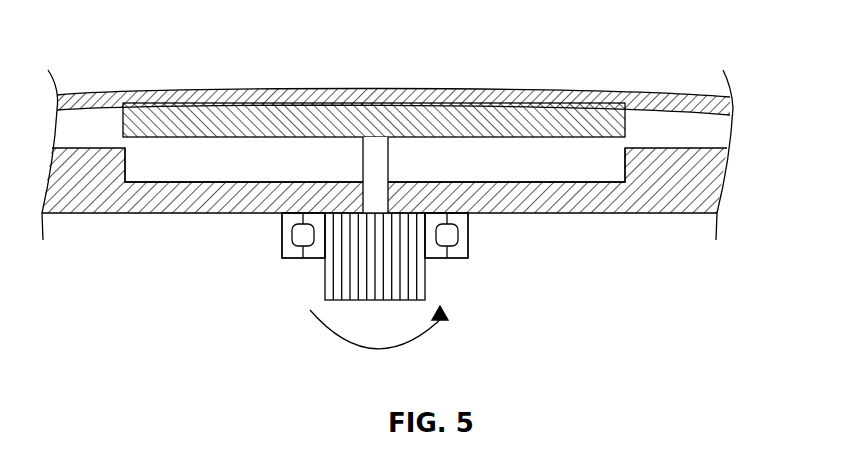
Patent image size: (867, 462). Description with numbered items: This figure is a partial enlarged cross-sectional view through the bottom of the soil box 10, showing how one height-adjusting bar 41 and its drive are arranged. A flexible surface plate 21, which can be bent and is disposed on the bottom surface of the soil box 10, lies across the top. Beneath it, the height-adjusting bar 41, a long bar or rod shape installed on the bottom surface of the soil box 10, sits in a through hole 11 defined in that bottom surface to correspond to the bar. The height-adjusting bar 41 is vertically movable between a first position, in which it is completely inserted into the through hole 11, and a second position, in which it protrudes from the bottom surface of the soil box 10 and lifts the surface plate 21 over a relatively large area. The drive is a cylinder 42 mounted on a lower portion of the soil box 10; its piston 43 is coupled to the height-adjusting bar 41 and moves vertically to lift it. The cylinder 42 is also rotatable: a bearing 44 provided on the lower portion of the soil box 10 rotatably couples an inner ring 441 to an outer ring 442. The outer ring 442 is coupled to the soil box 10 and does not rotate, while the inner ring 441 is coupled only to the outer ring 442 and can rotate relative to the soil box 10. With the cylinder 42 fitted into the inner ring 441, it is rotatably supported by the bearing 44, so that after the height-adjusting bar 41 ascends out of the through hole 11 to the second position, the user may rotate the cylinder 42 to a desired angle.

The soil box 10 is at (720, 192).
The through hole 11 is at (548, 163).
The surface plate 21 is at (680, 88).
The height-adjusting bar 41 is at (627, 117).
The cylinder 42 is at (425, 283).
The piston 43 is at (388, 165).
The bearing 44 is at (268, 330).
The inner ring 441 is at (315, 258).
The outer ring 442 is at (282, 250).